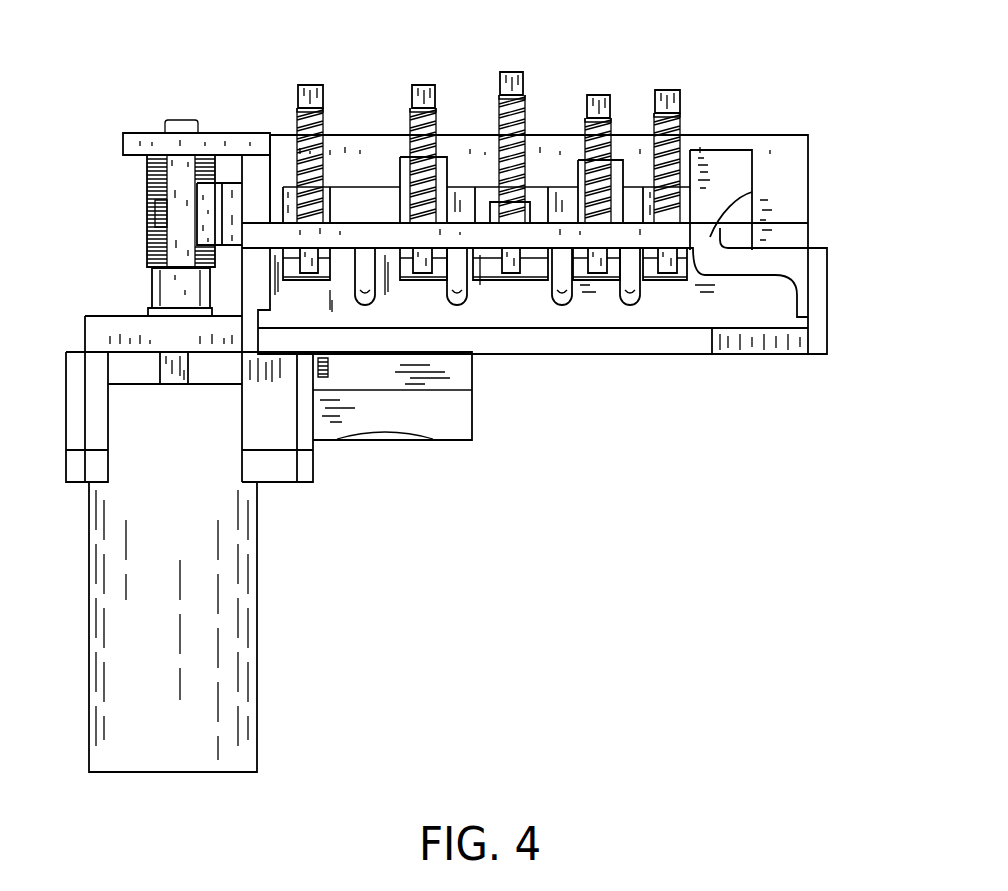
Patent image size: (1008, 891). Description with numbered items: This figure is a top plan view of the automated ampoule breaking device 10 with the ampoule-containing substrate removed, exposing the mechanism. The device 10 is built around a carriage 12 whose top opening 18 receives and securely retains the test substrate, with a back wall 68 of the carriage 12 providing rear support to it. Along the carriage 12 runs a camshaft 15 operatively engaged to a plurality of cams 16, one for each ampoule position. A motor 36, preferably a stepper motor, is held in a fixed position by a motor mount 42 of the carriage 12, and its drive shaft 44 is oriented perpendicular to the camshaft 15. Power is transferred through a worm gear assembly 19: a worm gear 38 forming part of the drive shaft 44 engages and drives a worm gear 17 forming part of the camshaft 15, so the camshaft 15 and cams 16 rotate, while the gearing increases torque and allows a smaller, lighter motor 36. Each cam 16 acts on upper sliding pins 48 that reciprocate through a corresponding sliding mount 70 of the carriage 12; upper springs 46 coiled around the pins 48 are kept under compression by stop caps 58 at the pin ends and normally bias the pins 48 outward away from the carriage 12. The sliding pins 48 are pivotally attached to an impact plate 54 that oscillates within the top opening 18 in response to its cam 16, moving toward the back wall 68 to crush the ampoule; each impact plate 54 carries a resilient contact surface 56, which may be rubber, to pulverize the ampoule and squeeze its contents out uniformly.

The device 10 is at (802, 99).
The carriage 12 is at (832, 333).
The camshaft 15 is at (147, 223).
The cams 16 is at (402, 168).
The worm gear 17 is at (172, 177).
The top opening 18 is at (778, 313).
The worm gear assembly 19 is at (114, 216).
The motor 36 is at (85, 677).
The worm gear 38 is at (147, 175).
The motor mount 42 is at (95, 322).
The drive shaft 44 is at (192, 362).
The upper springs 46 is at (295, 122).
The upper sliding pins 48 is at (321, 114).
The impact plate 54 is at (403, 274).
The resilient contact surface 56 is at (303, 280).
The stop caps 58 is at (308, 85).
The back wall 68 is at (611, 347).
The sliding mount 70 is at (752, 192).